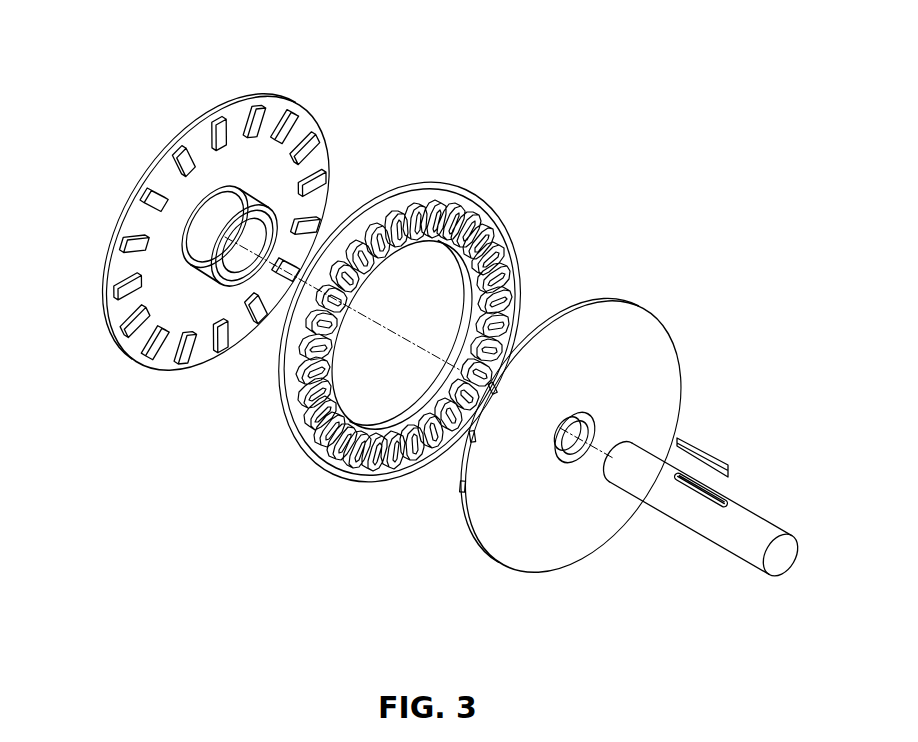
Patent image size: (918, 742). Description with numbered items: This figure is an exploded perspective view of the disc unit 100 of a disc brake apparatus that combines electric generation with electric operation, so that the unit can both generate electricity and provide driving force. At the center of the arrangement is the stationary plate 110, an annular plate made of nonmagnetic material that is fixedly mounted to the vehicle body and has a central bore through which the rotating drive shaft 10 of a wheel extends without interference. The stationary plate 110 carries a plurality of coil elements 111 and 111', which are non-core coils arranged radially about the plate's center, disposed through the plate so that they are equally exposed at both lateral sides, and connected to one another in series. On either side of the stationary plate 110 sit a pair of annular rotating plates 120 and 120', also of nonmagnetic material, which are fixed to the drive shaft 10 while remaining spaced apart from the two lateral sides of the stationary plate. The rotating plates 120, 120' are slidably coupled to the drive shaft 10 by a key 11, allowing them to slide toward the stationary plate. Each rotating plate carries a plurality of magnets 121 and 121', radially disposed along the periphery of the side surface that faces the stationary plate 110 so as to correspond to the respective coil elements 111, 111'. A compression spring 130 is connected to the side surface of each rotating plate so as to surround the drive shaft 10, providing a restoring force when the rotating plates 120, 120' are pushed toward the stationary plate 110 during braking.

The disc unit 100 is at (136, 47).
The rotating plate 120 is at (211, 231).
The magnets 121 is at (305, 318).
The magnets 121' is at (142, 379).
The compression spring 130 is at (257, 202).
The stationary plate 110 is at (422, 190).
The coil elements 111 is at (435, 310).
The coil elements 111' is at (289, 470).
The rotating plate 120' is at (602, 435).
The drive shaft 10 is at (712, 528).
The key 11 is at (715, 453).